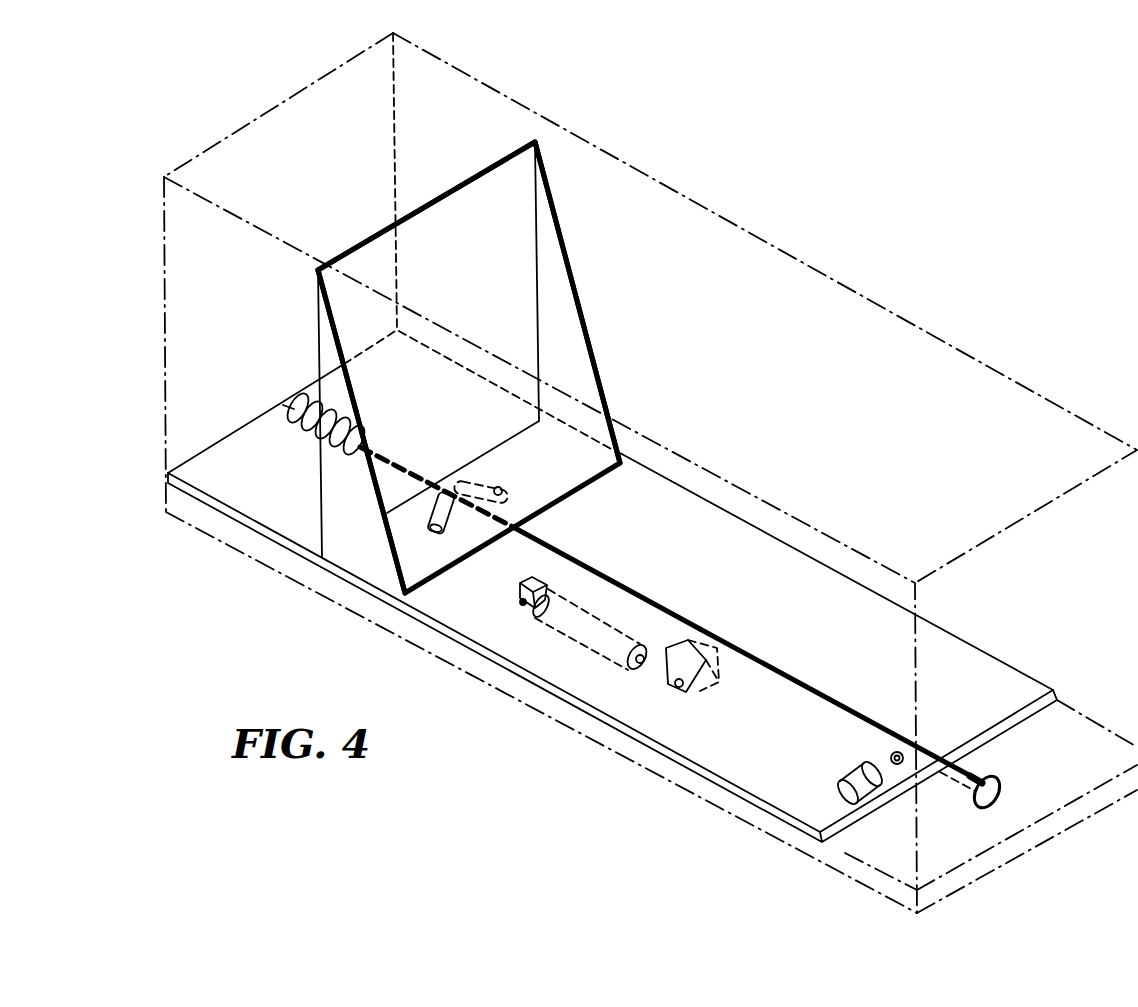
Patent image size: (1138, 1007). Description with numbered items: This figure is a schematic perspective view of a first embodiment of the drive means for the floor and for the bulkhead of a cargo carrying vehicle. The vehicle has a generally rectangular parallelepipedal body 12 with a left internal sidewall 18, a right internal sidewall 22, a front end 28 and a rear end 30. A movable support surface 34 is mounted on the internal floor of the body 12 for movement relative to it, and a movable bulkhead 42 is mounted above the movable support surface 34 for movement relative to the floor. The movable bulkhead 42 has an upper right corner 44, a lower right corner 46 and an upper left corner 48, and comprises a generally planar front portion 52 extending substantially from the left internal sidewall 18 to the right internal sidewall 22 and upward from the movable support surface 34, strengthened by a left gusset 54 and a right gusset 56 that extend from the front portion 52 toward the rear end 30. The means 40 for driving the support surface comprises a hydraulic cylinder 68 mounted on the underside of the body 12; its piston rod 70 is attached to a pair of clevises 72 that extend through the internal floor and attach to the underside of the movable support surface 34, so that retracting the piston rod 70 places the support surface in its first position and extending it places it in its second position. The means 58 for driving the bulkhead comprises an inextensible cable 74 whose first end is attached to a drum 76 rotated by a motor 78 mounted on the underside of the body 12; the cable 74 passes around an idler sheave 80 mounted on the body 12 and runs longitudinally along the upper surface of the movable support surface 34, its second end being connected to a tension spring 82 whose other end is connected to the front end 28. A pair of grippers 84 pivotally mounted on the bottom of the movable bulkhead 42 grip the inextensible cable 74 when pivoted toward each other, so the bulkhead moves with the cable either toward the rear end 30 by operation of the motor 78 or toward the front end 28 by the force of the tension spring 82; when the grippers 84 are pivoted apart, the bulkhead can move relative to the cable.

The body 12 is at (847, 276).
The left internal sidewall 18 is at (312, 582).
The right internal sidewall 22 is at (823, 402).
The front end 28 is at (205, 136).
The rear end 30 is at (1082, 822).
The movable support surface 34 is at (788, 603).
The means 40 is at (555, 642).
The movable bulkhead 42 is at (489, 275).
The upper right corner 44 is at (535, 142).
The lower right corner 46 is at (538, 422).
The upper left corner 48 is at (316, 272).
The front portion 52 is at (462, 186).
The left gusset 54 is at (368, 521).
The right gusset 56 is at (576, 322).
The means 58 is at (818, 681).
The hydraulic cylinder 68 is at (603, 654).
The piston rod 70 is at (675, 692).
The clevises 72 is at (710, 690).
The inextensible cable 74 is at (637, 596).
The drum 76 is at (897, 752).
The motor 78 is at (856, 770).
The idler sheave 80 is at (1000, 792).
The tension spring 82 is at (304, 440).
The grippers 84 is at (485, 480).